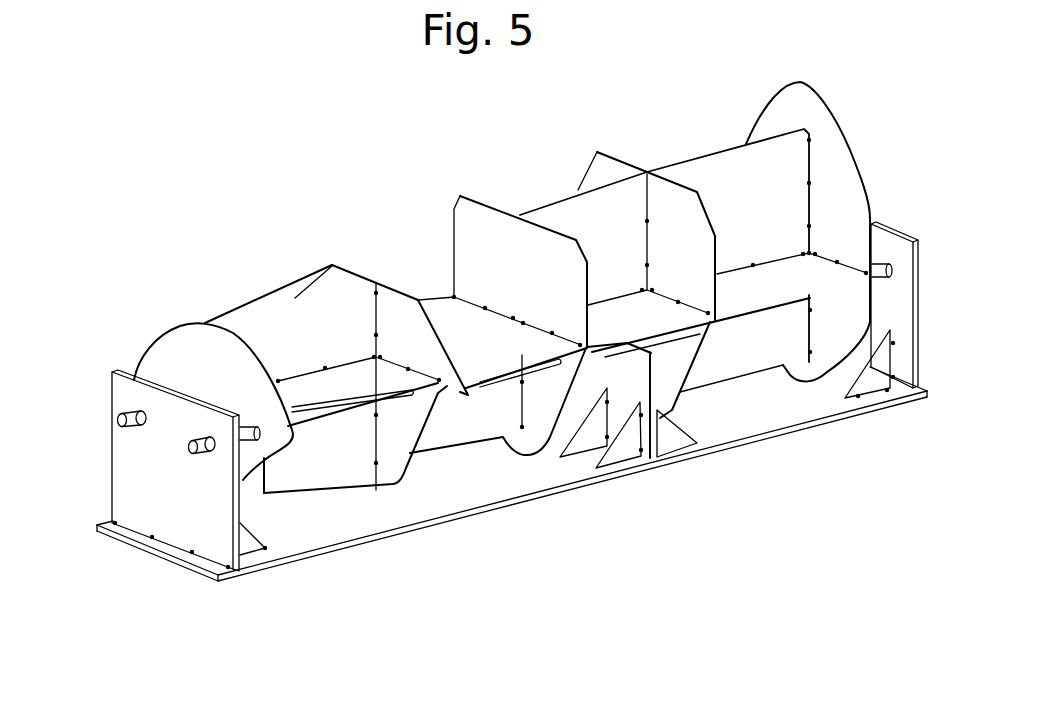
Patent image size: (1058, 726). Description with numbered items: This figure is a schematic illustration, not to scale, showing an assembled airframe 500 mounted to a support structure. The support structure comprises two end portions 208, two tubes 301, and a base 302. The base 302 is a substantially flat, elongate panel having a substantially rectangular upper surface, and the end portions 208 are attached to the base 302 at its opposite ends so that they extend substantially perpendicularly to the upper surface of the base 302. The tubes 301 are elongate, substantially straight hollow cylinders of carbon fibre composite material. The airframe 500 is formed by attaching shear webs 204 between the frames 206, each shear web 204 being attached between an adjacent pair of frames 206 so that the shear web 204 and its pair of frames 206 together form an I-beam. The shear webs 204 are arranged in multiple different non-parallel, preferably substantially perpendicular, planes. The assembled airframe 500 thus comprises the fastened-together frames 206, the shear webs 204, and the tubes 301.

The assembled airframe 500 is at (292, 248).
The shear web 204 is at (268, 330).
The frame 206 is at (187, 357).
The end portion 208 is at (163, 497).
The tube 301 is at (203, 437).
The base 302 is at (425, 498).